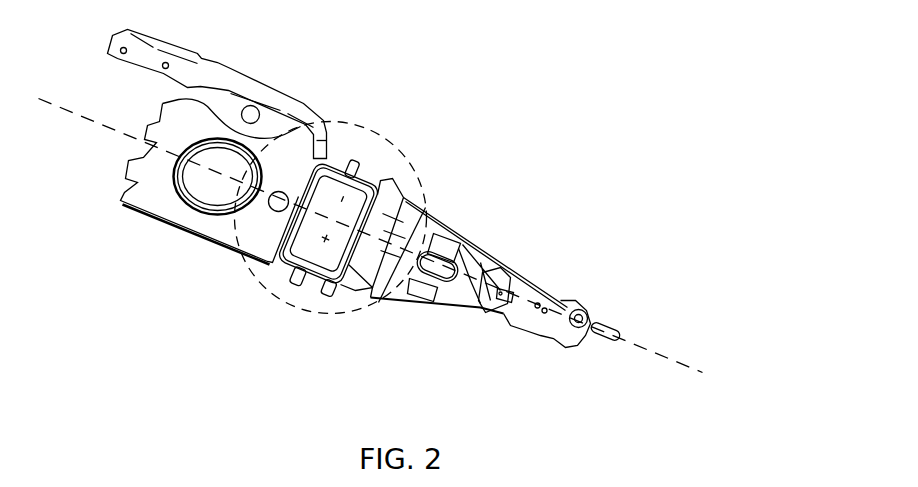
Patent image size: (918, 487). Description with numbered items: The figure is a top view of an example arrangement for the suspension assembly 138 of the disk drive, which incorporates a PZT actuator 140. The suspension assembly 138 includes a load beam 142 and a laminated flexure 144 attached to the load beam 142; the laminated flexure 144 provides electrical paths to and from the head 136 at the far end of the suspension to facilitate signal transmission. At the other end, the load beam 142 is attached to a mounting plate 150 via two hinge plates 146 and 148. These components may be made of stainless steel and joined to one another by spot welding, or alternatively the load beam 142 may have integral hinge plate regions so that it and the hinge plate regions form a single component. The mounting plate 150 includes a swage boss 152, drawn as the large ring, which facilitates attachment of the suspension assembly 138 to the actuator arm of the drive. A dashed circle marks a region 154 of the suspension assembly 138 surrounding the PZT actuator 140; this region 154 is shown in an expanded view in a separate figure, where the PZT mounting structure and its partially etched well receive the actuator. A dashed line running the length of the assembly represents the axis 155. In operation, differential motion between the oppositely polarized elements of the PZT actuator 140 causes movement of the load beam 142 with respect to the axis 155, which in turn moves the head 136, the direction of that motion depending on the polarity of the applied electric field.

The head 136 is at (612, 323).
The suspension assembly 138 is at (467, 157).
The PZT actuator 140 is at (332, 190).
The load beam 142 is at (433, 231).
The laminated flexure 144 is at (133, 53).
The hinge plate 146 is at (397, 200).
The hinge plate 148 is at (362, 290).
The mounting plate 150 is at (165, 211).
The swage boss 152 is at (166, 128).
The region of suspension assembly 154 is at (373, 132).
The axis 155 is at (705, 367).